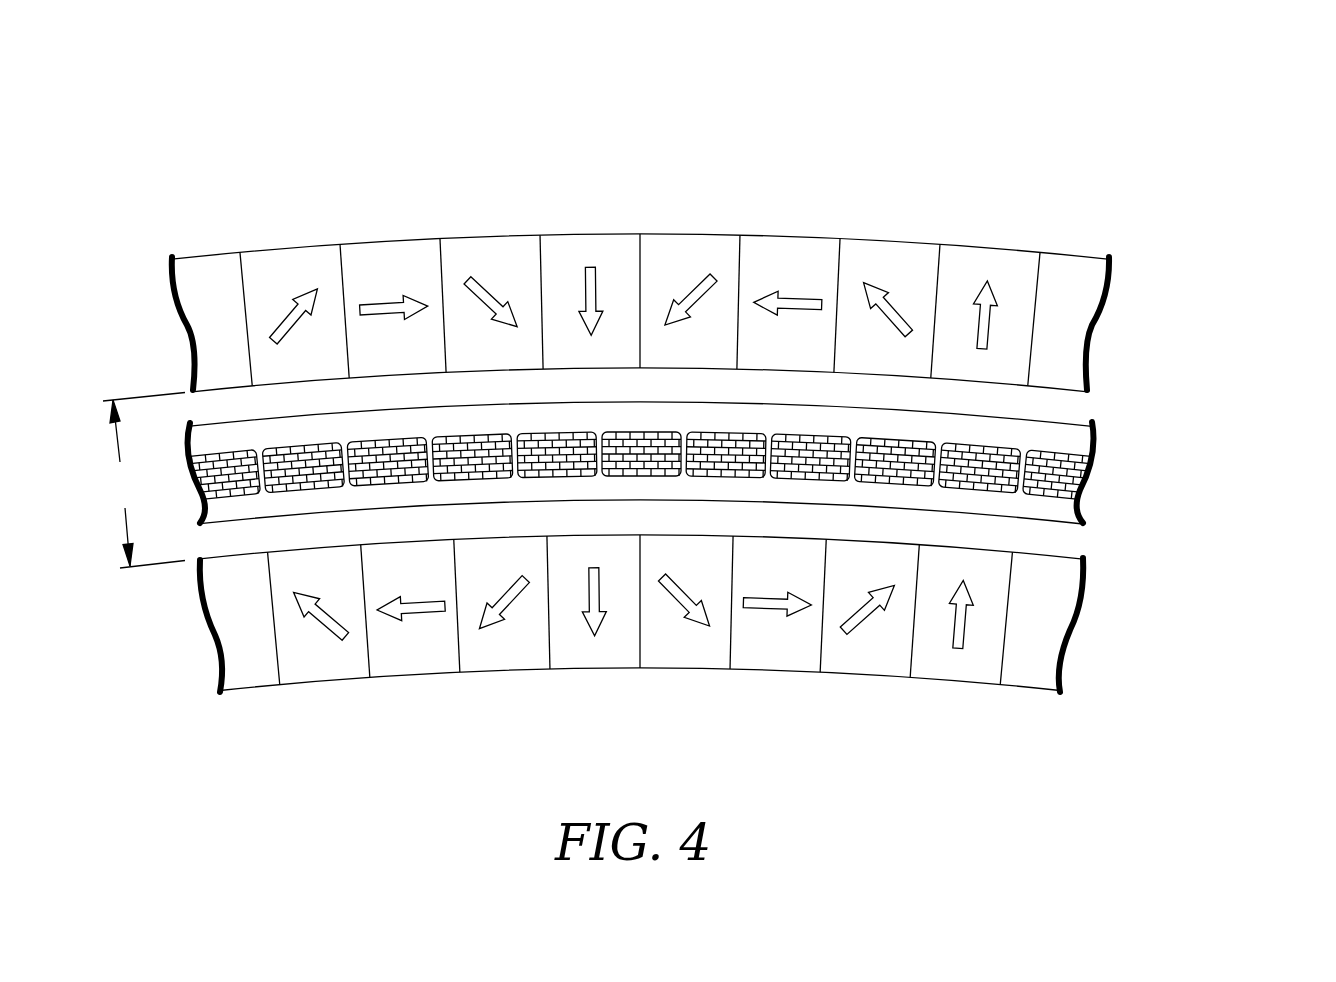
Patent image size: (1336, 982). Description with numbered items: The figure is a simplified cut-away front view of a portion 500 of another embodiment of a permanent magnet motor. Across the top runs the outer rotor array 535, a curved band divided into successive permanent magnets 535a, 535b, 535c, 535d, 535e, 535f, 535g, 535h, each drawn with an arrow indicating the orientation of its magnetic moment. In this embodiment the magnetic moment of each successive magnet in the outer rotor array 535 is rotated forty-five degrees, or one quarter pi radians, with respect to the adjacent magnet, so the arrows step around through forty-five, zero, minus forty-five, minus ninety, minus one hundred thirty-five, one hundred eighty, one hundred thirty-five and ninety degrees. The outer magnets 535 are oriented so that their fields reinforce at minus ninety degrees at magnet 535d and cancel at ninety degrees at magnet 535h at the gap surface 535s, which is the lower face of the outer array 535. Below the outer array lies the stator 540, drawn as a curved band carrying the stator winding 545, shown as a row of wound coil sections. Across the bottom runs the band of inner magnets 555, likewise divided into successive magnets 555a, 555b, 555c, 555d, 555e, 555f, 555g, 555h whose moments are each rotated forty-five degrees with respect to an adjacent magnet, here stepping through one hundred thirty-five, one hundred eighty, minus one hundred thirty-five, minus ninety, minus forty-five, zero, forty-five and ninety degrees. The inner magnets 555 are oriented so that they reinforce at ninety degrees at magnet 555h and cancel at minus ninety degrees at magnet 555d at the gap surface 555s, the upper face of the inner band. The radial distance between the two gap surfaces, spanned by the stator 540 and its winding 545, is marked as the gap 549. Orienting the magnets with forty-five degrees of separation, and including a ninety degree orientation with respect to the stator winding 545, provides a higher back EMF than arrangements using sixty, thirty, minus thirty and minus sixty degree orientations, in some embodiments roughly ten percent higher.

The portion of permanent magnet motor 500 is at (1140, 222).
The outer rotor array 535 is at (725, 279).
The outer rotor magnet 535a is at (268, 258).
The outer rotor magnet 535b is at (368, 253).
The outer rotor magnet 535c is at (462, 250).
The outer rotor magnet 535d is at (562, 248).
The outer rotor magnet 535e is at (660, 245).
The outer rotor magnet 535f is at (765, 248).
The outer rotor magnet 535g is at (868, 253).
The outer rotor magnet 535h is at (972, 258).
The gap surface of outer array 535s is at (1055, 387).
The stator 540 is at (714, 465).
The stator winding 545 is at (1048, 452).
The gap 549 is at (142, 481).
The inner magnets 555 is at (733, 655).
The inner rotor magnet 555a is at (300, 675).
The inner rotor magnet 555b is at (388, 665).
The inner rotor magnet 555c is at (475, 665).
The inner rotor magnet 555d is at (565, 660).
The inner rotor magnet 555e is at (655, 658).
The inner rotor magnet 555f is at (745, 660).
The inner rotor magnet 555g is at (835, 663).
The inner rotor magnet 555h is at (928, 668).
The gap surface of inner array 555s is at (1057, 556).